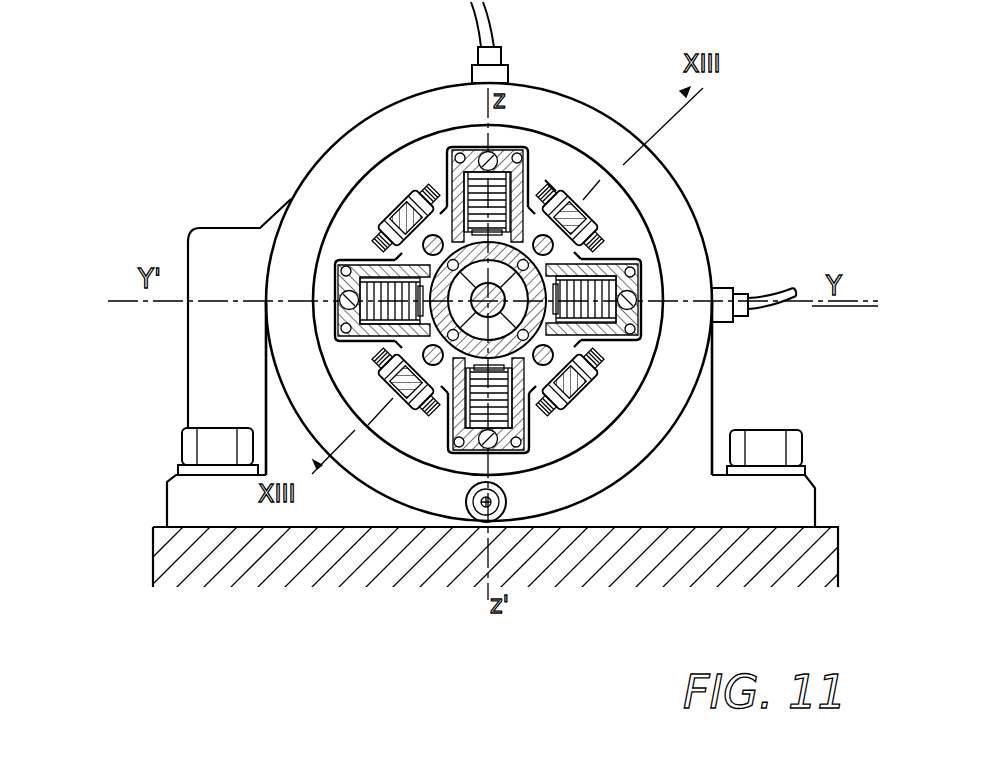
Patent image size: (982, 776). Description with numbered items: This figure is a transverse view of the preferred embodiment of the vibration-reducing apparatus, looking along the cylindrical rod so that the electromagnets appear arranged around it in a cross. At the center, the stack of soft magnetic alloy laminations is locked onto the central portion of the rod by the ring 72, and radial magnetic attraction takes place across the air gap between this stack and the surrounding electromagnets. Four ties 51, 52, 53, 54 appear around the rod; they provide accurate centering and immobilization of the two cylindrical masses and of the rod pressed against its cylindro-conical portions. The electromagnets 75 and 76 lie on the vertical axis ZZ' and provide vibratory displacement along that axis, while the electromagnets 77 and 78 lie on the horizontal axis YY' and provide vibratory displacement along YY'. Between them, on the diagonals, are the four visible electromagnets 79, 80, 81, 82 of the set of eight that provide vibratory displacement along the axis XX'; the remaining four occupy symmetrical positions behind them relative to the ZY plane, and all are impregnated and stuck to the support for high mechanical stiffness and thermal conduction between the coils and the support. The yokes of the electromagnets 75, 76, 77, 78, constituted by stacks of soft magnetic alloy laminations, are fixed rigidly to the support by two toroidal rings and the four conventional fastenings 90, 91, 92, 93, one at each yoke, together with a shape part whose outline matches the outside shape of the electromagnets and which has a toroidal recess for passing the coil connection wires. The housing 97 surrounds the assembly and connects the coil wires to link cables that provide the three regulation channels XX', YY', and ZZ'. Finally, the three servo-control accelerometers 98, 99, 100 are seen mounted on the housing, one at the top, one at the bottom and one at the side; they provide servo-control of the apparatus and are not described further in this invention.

The tie 51 is at (550, 187).
The tie 52 is at (587, 347).
The tie 53 is at (433, 337).
The tie 54 is at (447, 183).
The ring 72 is at (530, 415).
The electromagnet 75 is at (513, 143).
The electromagnet 76 is at (462, 447).
The electromagnet 77 is at (333, 273).
The electromagnet 78 is at (625, 297).
The electromagnet 79 is at (592, 210).
The electromagnet 80 is at (390, 218).
The electromagnet 81 is at (392, 405).
The electromagnet 82 is at (585, 400).
The fastening 90 is at (482, 147).
The fastening 91 is at (648, 292).
The fastening 92 is at (517, 450).
The fastening 93 is at (347, 300).
The housing 97 is at (190, 268).
The servo-control accelerometer 98 is at (480, 47).
The servo-control accelerometer 99 is at (482, 522).
The servo-control accelerometer 100 is at (750, 311).